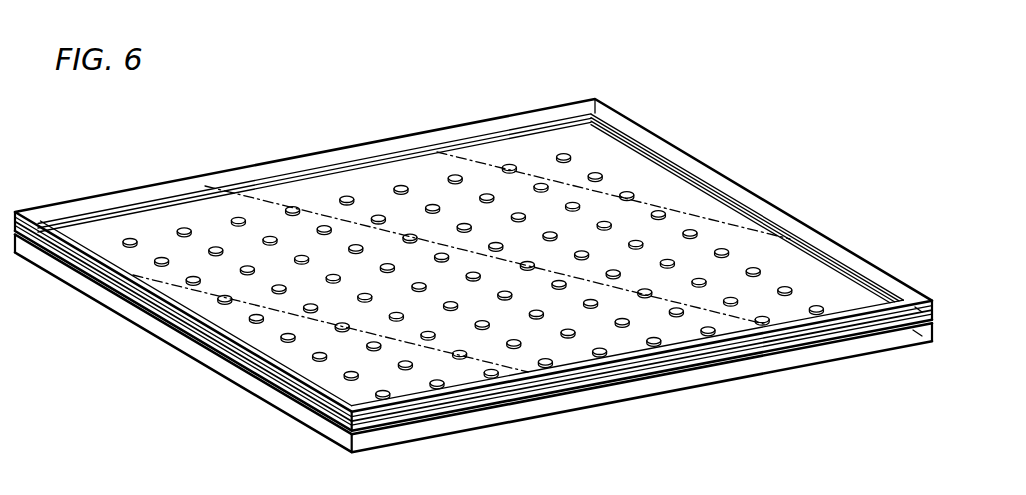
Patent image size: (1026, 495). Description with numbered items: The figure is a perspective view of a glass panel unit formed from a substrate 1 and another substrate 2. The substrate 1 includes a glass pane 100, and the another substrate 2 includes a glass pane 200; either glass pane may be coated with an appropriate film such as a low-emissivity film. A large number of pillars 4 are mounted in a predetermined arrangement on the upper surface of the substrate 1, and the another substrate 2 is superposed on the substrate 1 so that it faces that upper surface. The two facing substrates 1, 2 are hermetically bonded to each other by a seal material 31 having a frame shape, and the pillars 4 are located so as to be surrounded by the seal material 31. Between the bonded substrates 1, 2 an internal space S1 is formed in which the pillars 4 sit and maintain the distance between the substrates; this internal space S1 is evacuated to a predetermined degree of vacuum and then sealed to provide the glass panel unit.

The substrate 1 is at (566, 412).
The another substrate 2 is at (291, 168).
The pillars 4 is at (184, 231).
The seal material 31 is at (729, 206).
The glass pane 100 is at (190, 348).
The glass pane 200 is at (366, 167).
The internal space S1 is at (603, 196).